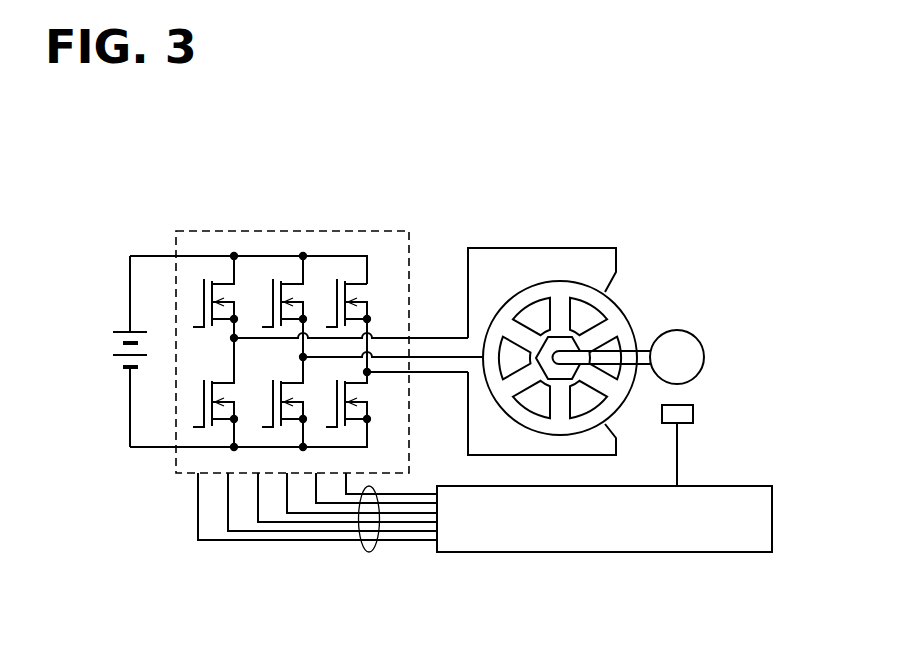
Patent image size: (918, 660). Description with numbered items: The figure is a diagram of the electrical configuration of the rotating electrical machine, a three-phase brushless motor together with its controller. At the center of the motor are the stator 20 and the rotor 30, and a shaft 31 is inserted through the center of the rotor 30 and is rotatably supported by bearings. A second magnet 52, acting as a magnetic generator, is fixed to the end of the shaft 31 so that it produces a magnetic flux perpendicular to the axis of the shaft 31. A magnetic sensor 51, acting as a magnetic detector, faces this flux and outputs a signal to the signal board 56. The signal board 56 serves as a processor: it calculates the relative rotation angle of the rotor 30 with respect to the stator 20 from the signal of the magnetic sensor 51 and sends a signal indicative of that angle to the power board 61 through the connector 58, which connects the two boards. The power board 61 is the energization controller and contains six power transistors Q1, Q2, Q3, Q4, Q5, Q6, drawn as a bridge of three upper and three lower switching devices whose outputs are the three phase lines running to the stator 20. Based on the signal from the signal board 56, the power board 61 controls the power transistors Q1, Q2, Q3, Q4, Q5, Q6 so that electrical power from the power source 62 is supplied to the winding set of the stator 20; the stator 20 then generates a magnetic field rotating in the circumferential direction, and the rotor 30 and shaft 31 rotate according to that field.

The stator 20 is at (622, 310).
The rotor 30 is at (577, 331).
The shaft 31 is at (643, 348).
The magnetic sensor 51 is at (693, 413).
The second magnet 52 is at (680, 352).
The signal board 56 is at (733, 500).
The connector 58 is at (370, 548).
The power board 61 is at (173, 457).
The power source 62 is at (123, 368).
The power transistor Q1 is at (225, 285).
The power transistor Q2 is at (295, 283).
The power transistor Q3 is at (363, 283).
The power transistor Q4 is at (222, 420).
The power transistor Q5 is at (293, 420).
The power transistor Q6 is at (362, 420).